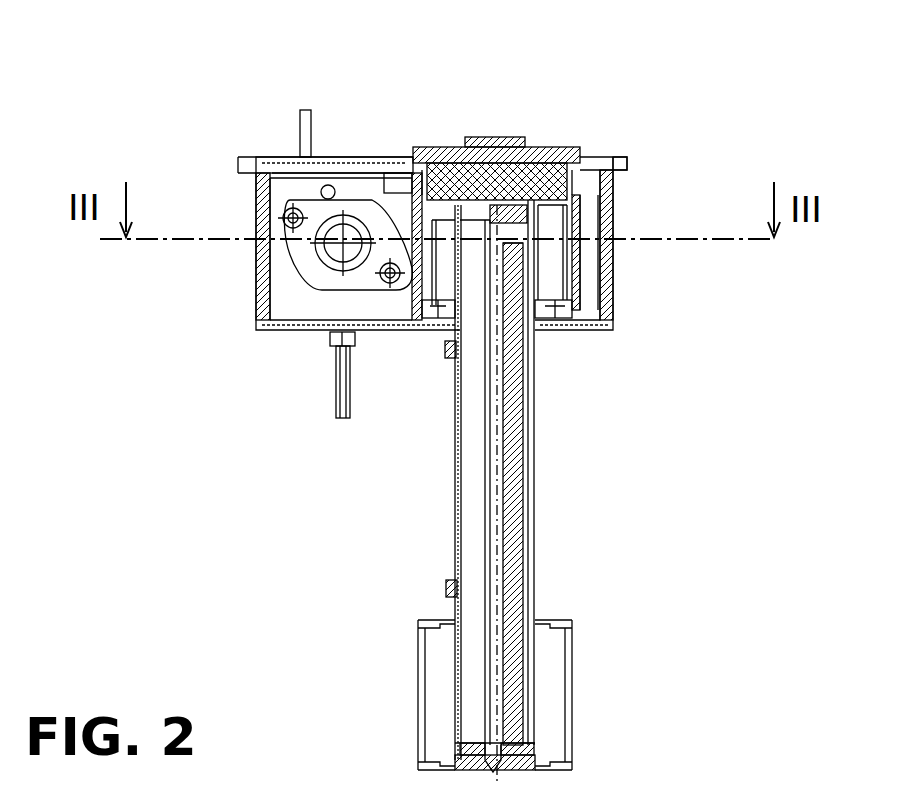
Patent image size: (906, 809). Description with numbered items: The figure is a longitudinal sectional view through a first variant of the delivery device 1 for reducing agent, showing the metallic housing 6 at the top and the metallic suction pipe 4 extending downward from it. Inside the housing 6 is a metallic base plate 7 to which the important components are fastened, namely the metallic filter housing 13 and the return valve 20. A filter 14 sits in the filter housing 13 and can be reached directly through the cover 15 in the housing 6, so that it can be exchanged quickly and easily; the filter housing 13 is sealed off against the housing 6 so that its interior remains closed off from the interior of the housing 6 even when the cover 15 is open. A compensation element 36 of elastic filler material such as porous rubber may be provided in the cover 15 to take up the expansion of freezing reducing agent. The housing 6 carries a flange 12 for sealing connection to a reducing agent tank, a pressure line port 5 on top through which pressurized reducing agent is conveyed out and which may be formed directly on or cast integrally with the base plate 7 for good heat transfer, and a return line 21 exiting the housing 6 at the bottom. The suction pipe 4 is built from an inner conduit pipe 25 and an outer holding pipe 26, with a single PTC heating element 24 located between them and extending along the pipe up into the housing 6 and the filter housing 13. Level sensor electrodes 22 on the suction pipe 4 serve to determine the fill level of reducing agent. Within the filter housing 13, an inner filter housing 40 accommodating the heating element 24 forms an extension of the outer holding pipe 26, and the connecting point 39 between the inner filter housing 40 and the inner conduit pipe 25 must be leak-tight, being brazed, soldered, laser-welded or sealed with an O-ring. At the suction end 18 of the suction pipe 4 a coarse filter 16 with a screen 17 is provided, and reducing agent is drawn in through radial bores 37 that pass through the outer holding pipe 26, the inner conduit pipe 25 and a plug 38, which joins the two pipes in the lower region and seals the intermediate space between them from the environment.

The delivery device 1 is at (238, 218).
The suction pipe 4 is at (565, 485).
The pressure line port 5 is at (297, 115).
The housing 6 is at (615, 287).
The base plate 7 is at (285, 183).
The flange 12 is at (607, 165).
The filter housing 13 is at (420, 216).
The filter 14 is at (443, 230).
The cover 15 is at (549, 150).
The coarse filter 16 is at (575, 615).
The screen 17 is at (570, 698).
The suction end 18 is at (533, 752).
The return valve 20 is at (300, 265).
The return line 21 is at (330, 385).
The level sensor electrodes 22 is at (444, 350).
The heating element 24 is at (512, 392).
The inner conduit pipe 25 is at (485, 555).
The outer holding pipe 26 is at (455, 443).
The compensation element 36 is at (553, 148).
The radial bores 37 is at (462, 752).
The plug 38 is at (472, 750).
The connecting point 39 is at (500, 220).
The inner filter housing 40 is at (473, 220).